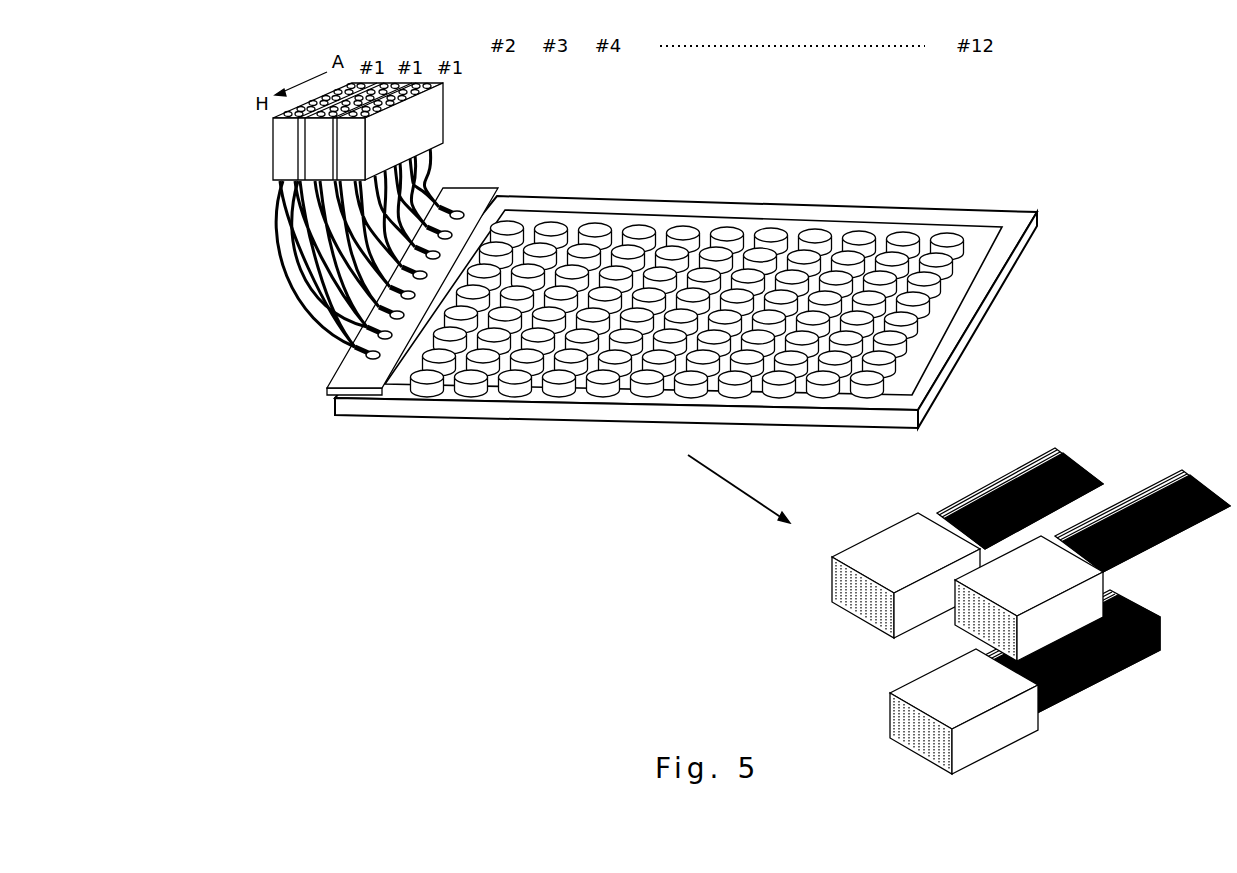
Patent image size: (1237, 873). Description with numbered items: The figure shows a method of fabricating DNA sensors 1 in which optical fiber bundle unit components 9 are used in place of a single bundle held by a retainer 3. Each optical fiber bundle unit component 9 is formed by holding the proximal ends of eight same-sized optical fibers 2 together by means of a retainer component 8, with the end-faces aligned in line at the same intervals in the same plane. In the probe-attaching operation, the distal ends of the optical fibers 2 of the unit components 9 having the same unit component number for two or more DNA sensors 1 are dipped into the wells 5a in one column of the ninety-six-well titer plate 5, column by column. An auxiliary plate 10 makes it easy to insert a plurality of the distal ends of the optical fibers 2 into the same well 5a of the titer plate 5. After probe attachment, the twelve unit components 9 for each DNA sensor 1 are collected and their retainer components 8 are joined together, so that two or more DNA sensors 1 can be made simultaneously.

The DNA sensor 1 is at (1037, 738).
The optical fiber 2 is at (1027, 462).
The retainer 3 is at (939, 605).
The 96-well titer plate 5 is at (965, 336).
The well 5a is at (947, 238).
The retainer component 8 is at (350, 181).
The optical fiber bundle unit component 9 is at (363, 166).
The auxiliary plate 10 is at (352, 370).